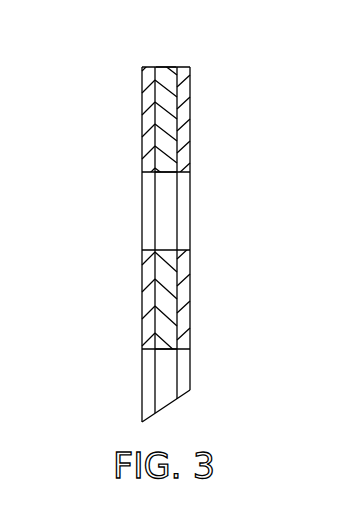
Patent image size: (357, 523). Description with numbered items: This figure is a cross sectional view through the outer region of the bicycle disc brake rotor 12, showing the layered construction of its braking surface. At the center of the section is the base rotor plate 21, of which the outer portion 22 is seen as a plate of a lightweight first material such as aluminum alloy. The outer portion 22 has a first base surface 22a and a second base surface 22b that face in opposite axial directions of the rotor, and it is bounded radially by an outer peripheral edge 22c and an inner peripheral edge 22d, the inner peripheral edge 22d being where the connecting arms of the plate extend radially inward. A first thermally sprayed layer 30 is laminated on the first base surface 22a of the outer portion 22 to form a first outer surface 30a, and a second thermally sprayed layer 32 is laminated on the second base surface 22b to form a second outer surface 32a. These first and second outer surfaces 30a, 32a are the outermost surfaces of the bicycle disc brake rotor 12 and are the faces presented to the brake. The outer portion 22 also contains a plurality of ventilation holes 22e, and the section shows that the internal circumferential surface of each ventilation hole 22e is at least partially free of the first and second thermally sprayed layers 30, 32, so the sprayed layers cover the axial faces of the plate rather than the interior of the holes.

The bicycle disc brake rotor 12 is at (106, 89).
The base rotor plate 21 is at (161, 58).
The outer portion 22 is at (180, 295).
The first base surface 22a is at (155, 145).
The second base surface 22b is at (177, 149).
The outer peripheral edge 22c is at (170, 67).
The inner peripheral edge 22d is at (163, 349).
The ventilation hole 22e is at (163, 175).
The first thermally sprayed layer 30 is at (138, 86).
The first outer surface 30a is at (142, 108).
The second thermally sprayed layer 32 is at (195, 77).
The second outer surface 32a is at (190, 107).